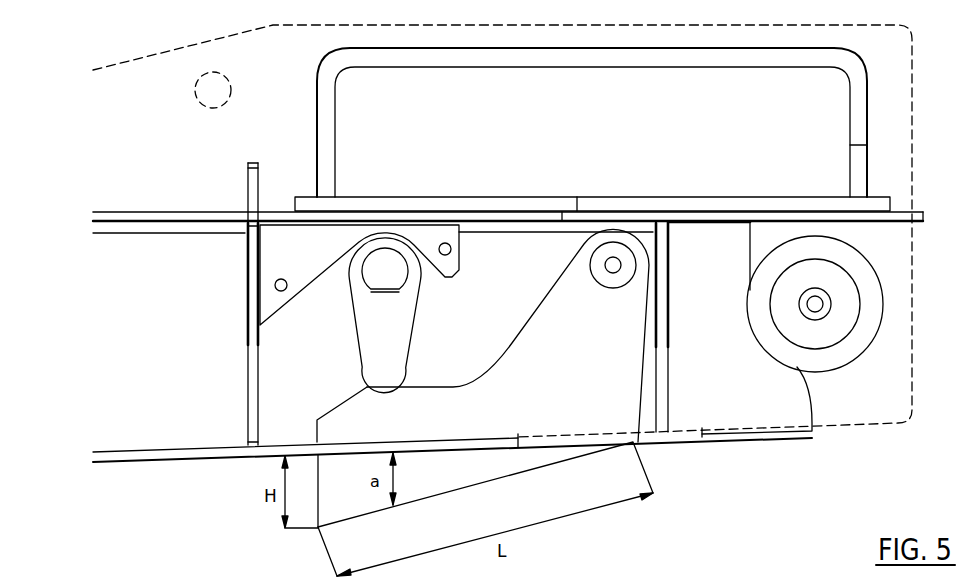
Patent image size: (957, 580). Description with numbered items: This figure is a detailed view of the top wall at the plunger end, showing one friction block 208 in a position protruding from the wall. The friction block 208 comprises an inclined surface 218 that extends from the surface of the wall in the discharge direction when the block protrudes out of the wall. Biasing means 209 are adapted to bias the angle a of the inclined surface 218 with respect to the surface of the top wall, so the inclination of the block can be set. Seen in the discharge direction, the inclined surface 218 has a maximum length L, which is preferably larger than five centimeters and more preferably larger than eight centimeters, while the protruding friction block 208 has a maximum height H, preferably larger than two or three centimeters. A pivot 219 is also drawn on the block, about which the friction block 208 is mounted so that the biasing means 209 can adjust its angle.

The friction block 208 is at (535, 360).
The biasing means 209 is at (340, 342).
The inclined surface 218 is at (493, 480).
The pivot pin 219 is at (612, 266).